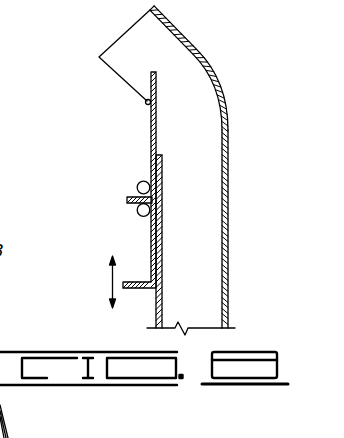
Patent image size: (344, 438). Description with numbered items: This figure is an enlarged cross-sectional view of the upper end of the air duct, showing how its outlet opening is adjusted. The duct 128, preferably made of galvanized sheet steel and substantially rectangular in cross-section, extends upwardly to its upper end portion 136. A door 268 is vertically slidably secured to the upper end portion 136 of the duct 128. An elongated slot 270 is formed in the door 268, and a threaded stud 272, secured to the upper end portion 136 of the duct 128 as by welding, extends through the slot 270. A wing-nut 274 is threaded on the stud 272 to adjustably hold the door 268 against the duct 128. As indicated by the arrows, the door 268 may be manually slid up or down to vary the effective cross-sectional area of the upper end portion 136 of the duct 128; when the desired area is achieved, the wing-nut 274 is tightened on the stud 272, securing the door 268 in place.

The upper end portion 136 is at (159, 17).
The duct 128 is at (231, 193).
The elongated slot 270 is at (149, 172).
The door 268 is at (156, 112).
The wing-nut 274 is at (139, 182).
The threaded stud 272 is at (126, 203).